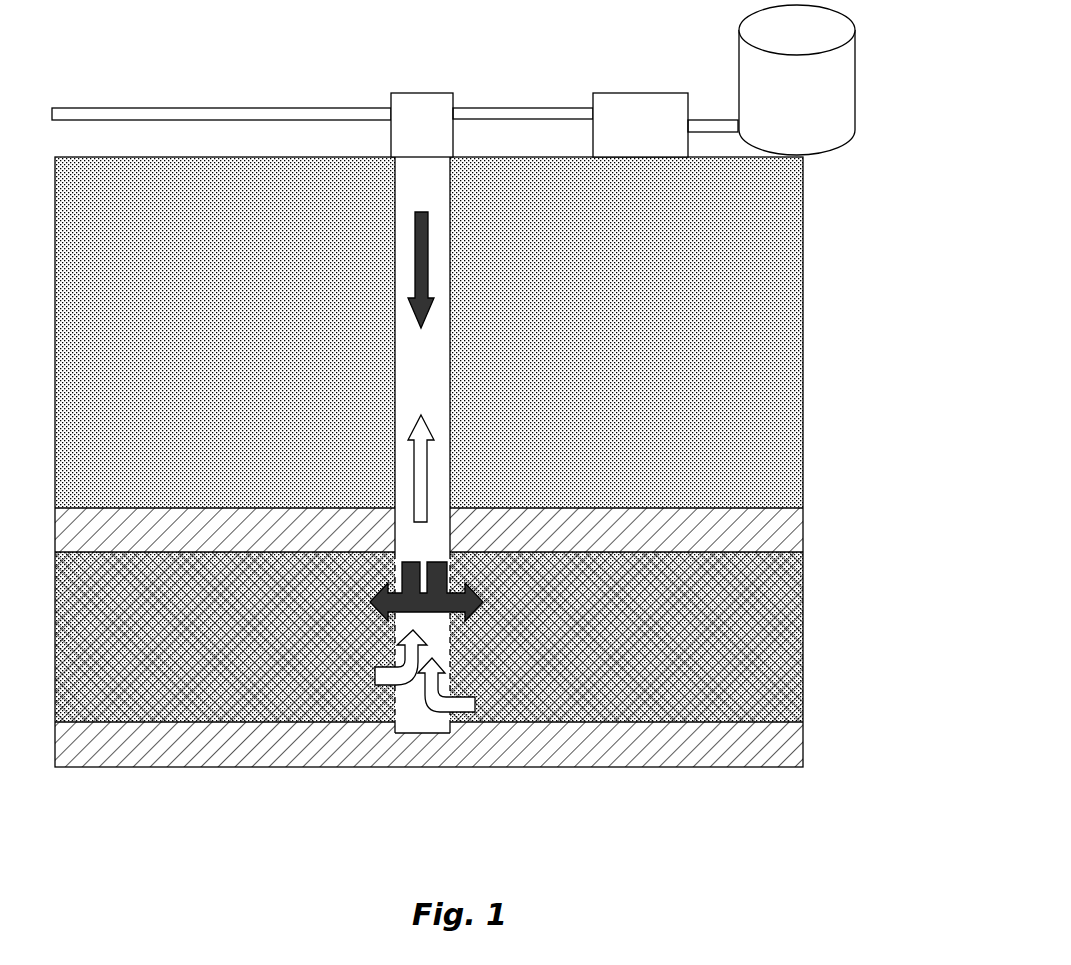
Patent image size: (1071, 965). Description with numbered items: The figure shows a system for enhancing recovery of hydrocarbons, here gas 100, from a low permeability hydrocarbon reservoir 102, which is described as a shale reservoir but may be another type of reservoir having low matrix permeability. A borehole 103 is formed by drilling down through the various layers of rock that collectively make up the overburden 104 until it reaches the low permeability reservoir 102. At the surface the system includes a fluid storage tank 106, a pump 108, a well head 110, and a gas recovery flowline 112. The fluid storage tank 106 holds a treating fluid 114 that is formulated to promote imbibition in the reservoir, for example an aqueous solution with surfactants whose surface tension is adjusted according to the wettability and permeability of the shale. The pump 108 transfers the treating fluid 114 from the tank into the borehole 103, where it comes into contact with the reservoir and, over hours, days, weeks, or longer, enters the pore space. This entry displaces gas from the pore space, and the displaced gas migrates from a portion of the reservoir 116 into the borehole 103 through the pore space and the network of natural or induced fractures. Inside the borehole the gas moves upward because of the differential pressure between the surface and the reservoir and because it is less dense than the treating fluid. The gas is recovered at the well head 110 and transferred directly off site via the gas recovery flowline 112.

The gas 100 is at (395, 705).
The low permeability hydrocarbon reservoir 102 is at (237, 543).
The borehole 103 is at (437, 368).
The overburden 104 is at (168, 281).
The fluid storage tank 106 is at (815, 106).
The pump 108 is at (609, 93).
The well head 110 is at (418, 93).
The gas recovery flowline 112 is at (198, 108).
The treating fluid 114 is at (412, 283).
The portion of the reservoir 116 is at (237, 643).